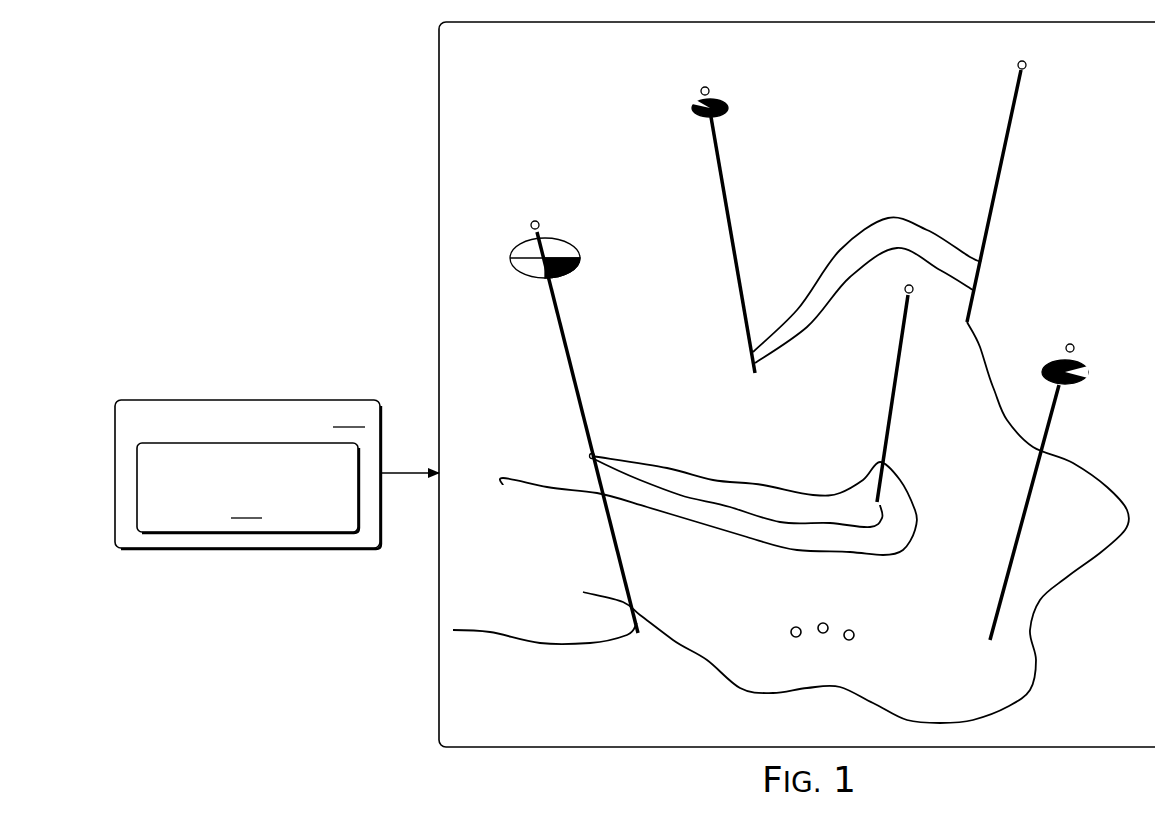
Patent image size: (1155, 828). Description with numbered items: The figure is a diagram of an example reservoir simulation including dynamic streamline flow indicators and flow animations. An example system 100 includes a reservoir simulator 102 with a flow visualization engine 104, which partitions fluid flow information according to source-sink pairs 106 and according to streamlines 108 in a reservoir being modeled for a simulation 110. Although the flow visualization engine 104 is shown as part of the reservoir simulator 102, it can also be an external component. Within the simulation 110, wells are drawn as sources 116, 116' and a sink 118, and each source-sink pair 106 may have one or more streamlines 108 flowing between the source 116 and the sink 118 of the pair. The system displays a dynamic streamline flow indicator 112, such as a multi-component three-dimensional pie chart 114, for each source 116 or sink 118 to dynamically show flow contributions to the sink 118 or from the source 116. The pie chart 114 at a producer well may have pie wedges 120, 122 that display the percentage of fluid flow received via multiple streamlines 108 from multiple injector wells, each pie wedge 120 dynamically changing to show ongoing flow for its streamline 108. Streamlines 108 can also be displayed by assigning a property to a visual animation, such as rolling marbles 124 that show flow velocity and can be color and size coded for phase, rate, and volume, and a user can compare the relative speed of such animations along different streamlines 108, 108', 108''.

The system 100 is at (277, 446).
The reservoir simulator 102 is at (248, 474).
The flow visualization engine 104 is at (248, 488).
The source-sink pair 106 is at (992, 126).
The streamline 108 is at (708, 497).
The streamline 108' is at (791, 522).
The streamline 108'' is at (867, 287).
The simulation 110 is at (437, 104).
The dynamic streamline flow indicator 112 is at (1011, 191).
The multi-component 3D pie chart 114 is at (558, 257).
The source 116 is at (857, 393).
The source 116' is at (964, 196).
The sink 118 is at (573, 405).
The pie wedge 120 is at (528, 286).
The pie wedge 122 is at (576, 284).
The rolling marbles 124 is at (808, 612).